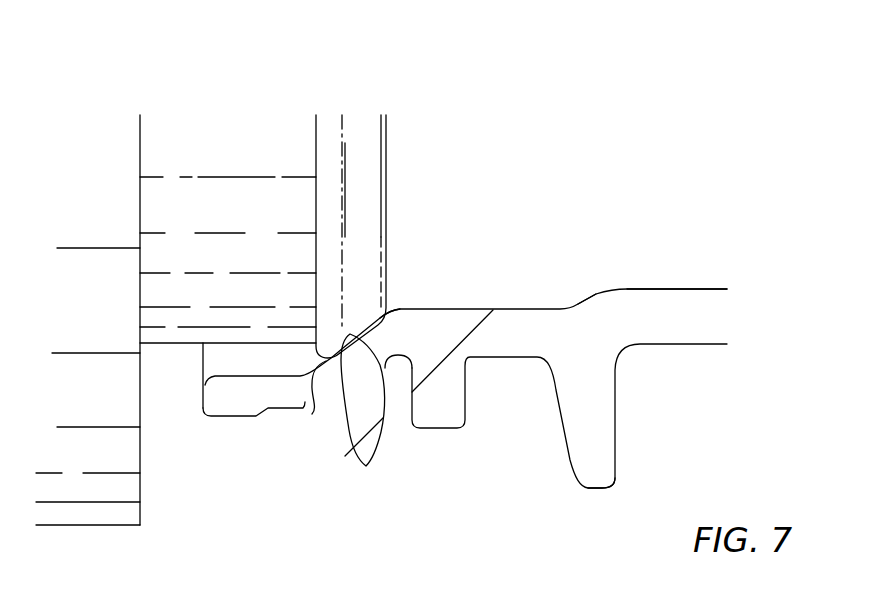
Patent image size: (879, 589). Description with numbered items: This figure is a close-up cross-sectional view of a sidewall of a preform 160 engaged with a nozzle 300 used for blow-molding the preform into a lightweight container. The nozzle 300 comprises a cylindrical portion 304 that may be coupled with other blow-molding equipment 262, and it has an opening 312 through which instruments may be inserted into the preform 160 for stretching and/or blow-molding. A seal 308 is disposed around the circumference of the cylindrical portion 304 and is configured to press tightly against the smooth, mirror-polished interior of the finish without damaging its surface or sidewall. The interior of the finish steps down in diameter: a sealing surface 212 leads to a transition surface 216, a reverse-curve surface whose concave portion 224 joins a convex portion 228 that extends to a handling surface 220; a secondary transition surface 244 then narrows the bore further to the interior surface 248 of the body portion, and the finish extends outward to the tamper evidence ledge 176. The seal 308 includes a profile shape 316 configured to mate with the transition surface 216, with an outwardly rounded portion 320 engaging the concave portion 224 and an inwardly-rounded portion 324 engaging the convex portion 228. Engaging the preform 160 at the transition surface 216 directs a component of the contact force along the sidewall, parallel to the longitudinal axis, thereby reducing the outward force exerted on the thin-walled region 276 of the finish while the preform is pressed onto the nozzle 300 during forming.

The nozzle 300 is at (199, 84).
The cylindrical portion 304 is at (244, 217).
The blow-molding equipment 262 is at (80, 525).
The outwardly rounded portion 320 is at (328, 167).
The seal 308 is at (350, 150).
The inwardly-rounded portion 324 is at (367, 167).
The opening 312 is at (400, 211).
The convex portion 228 is at (393, 311).
The handling surface 220 is at (514, 293).
The secondary transition surface 244 is at (578, 303).
The interior surface 248 is at (696, 267).
The preform 160 is at (670, 347).
The tamper evidence ledge 176 is at (602, 488).
The transition surface 216 is at (385, 368).
The profile shape 316 is at (340, 422).
The concave portion 224 is at (312, 414).
The sealing surface 212 is at (222, 359).
The thin-walled region 276 is at (239, 397).